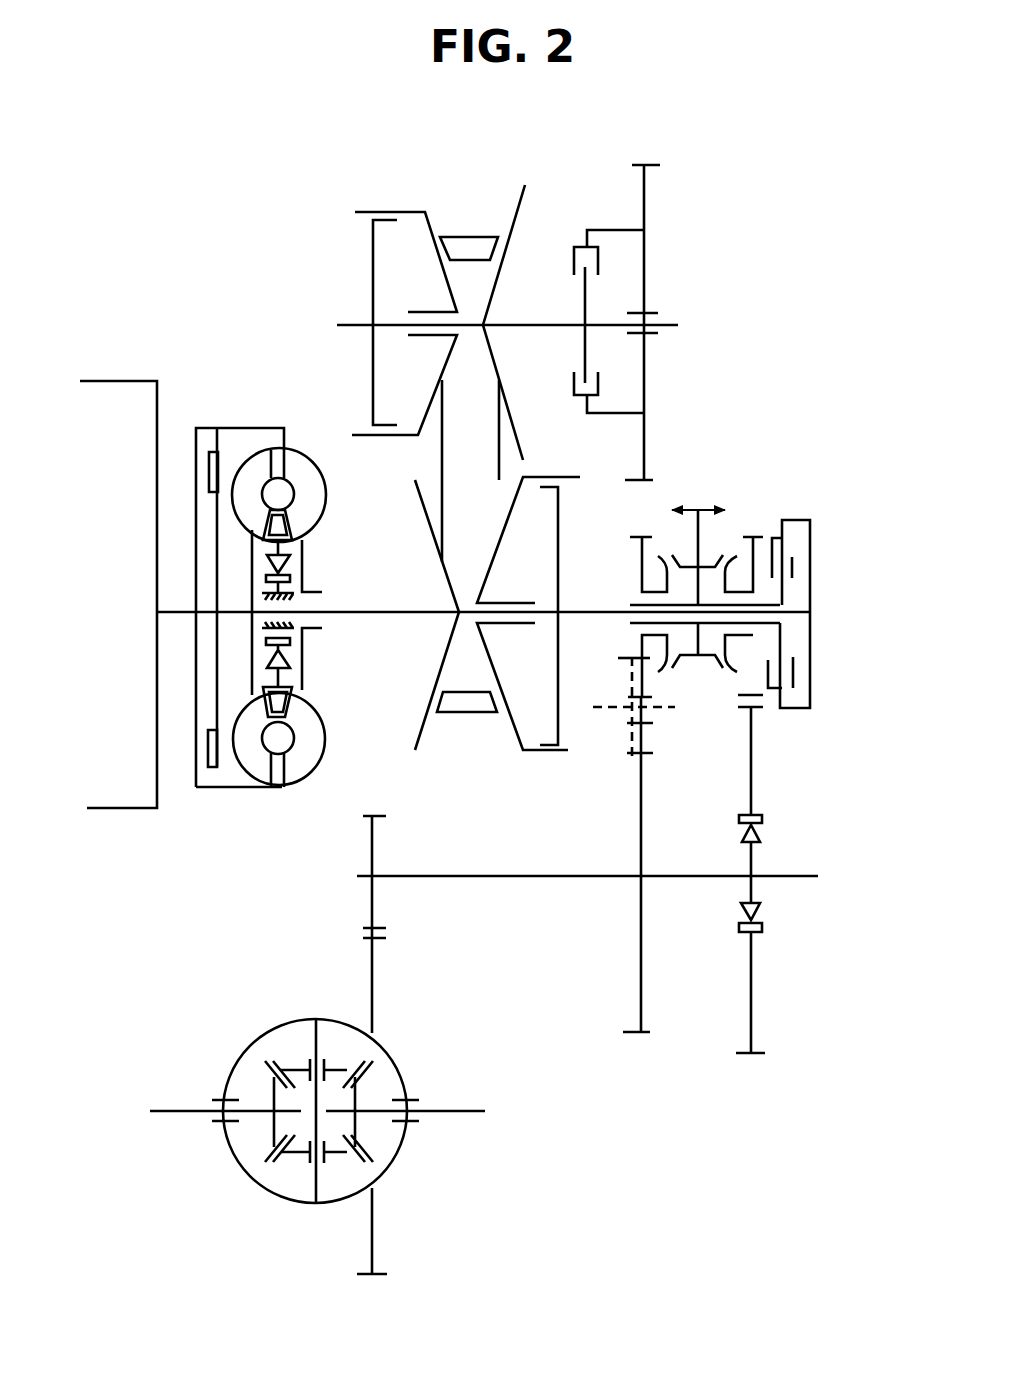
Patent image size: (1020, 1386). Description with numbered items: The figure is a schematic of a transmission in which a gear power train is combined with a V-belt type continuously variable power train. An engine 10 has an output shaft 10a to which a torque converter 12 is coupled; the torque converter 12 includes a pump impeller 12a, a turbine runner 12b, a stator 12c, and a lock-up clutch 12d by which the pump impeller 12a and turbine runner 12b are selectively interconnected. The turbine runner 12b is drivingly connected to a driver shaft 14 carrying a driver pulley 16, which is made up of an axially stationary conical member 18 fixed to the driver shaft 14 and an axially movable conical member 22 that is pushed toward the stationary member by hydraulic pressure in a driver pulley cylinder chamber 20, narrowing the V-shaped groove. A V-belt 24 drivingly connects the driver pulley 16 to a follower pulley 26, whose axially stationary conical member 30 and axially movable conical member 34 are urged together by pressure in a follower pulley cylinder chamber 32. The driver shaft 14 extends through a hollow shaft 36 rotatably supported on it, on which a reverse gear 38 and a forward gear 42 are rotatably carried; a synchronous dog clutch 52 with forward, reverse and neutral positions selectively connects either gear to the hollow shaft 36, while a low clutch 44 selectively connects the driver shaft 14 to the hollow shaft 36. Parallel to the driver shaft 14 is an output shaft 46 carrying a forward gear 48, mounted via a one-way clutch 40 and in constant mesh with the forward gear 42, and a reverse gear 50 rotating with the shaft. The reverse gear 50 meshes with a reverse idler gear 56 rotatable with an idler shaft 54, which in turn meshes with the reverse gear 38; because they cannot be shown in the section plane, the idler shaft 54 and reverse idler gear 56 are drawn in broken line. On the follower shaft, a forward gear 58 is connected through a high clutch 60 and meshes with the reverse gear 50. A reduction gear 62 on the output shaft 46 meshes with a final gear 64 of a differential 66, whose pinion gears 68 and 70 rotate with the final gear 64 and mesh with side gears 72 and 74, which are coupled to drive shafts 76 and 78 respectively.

The engine 10 is at (128, 394).
The output shaft 10a is at (178, 613).
The torque converter 12 is at (287, 426).
The pump impeller 12a is at (312, 487).
The turbine runner 12b is at (257, 473).
The stator 12c is at (285, 527).
The lock-up clutch 12d is at (205, 466).
The driver shaft 14 is at (408, 610).
The driver pulley 16 is at (468, 716).
The axially stationary conical member 18 is at (420, 735).
The driver pulley cylinder chamber 20 is at (540, 692).
The axially movable conical member 22 is at (515, 738).
The V-belt 24 is at (500, 482).
The follower pulley 26 is at (488, 222).
The axially stationary conical member 30 is at (512, 208).
The follower pulley cylinder chamber 32 is at (385, 265).
The axially movable conical member 34 is at (430, 223).
The hollow shaft 36 is at (633, 603).
The reverse gear on the driver shaft side 38 is at (640, 535).
The one-way clutch 40 is at (757, 912).
The forward gear on the driver shaft side 42 is at (758, 537).
The low clutch 44 is at (807, 537).
The output shaft 46 is at (540, 876).
The forward gear on the output shaft side 48 is at (752, 1055).
The reverse gear 50 is at (643, 1035).
The synchronous dog clutch 52 is at (744, 531).
The idler shaft 54 is at (675, 707).
The reverse idler gear 56 is at (624, 755).
The forward gear 58 is at (650, 165).
The high clutch 60 is at (577, 233).
The reduction gear 62 is at (373, 814).
The final gear 64 is at (386, 938).
The differential 66 is at (313, 1016).
The pinion gear 68 is at (330, 1067).
The pinion gear 70 is at (336, 1152).
The side gear 72 is at (273, 1124).
The side gear 74 is at (356, 1128).
The drive shaft 76 is at (175, 1110).
The drive shaft 78 is at (452, 1110).